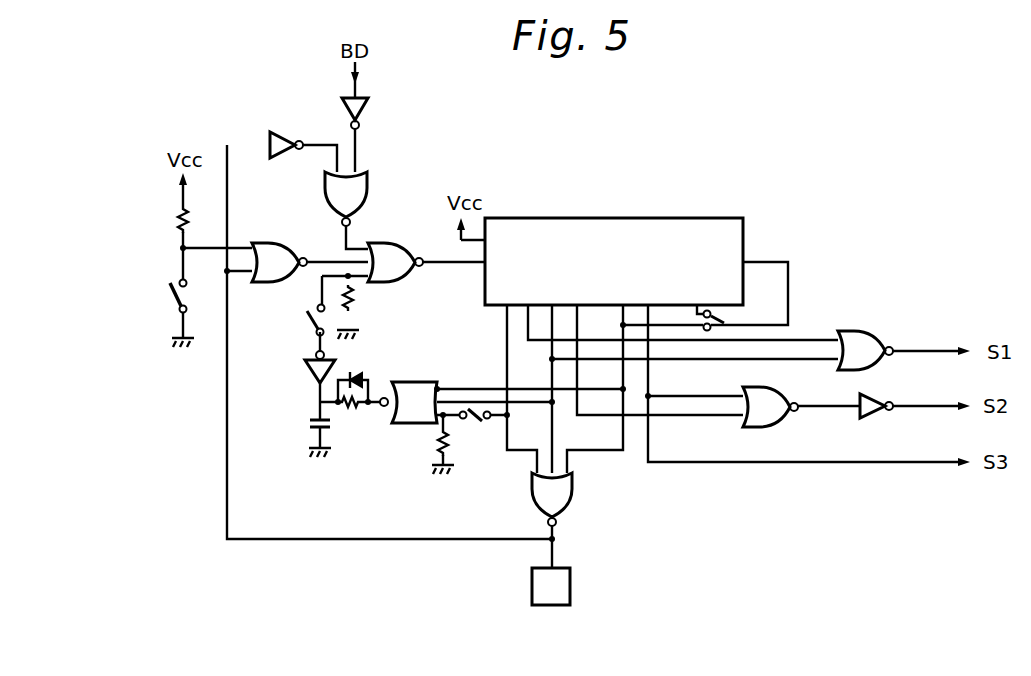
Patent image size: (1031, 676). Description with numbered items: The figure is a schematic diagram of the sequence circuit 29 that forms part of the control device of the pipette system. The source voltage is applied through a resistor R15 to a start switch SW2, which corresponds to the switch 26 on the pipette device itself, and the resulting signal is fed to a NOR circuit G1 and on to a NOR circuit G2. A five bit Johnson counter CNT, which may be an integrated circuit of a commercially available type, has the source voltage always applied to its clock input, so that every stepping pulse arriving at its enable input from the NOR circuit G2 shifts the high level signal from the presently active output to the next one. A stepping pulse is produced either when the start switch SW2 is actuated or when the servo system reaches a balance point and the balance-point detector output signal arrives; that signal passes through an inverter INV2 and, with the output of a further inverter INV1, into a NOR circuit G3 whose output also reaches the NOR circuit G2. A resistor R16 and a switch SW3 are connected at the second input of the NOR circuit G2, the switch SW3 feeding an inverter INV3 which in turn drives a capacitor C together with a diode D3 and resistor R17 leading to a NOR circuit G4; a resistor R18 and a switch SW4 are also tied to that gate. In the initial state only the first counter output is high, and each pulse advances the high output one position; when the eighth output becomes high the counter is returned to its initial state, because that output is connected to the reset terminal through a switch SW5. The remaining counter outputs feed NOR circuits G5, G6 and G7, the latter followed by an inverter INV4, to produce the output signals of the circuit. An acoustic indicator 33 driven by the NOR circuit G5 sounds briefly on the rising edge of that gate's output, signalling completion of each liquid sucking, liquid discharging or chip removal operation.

The sequence circuit 29 is at (236, 553).
The acoustic indicator 33 is at (570, 587).
The switch 26 is at (137, 314).
The start switch SW2 is at (137, 314).
The switch SW3 is at (307, 317).
The switch SW4 is at (474, 425).
The switch SW5 is at (716, 326).
The resistor R15 is at (178, 219).
The resistor R16 is at (355, 300).
The resistor R17 is at (352, 406).
The resistor R18 is at (438, 448).
The capacitor C is at (308, 426).
The diode D3 is at (356, 375).
The inverter INV1 is at (285, 132).
The inverter INV2 is at (369, 112).
The inverter INV3 is at (304, 373).
The inverter INV4 is at (879, 393).
The NOR circuit G1 is at (276, 243).
The NOR circuit G2 is at (380, 243).
The NOR circuit G3 is at (371, 181).
The NOR circuit G4 is at (433, 382).
The NOR circuit G5 is at (574, 490).
The NOR circuit G6 is at (871, 331).
The NOR circuit G7 is at (773, 388).
The five bit Johnson counter CNT is at (643, 218).